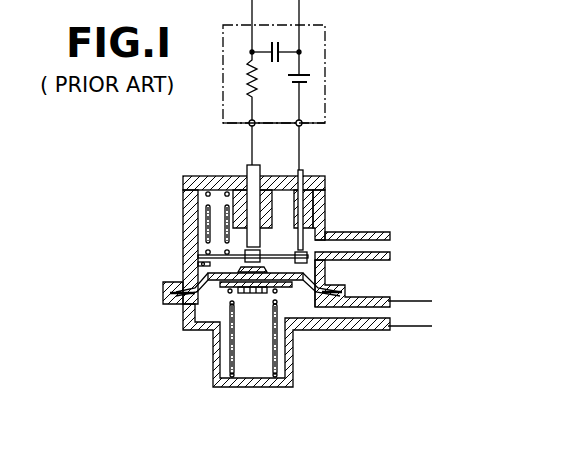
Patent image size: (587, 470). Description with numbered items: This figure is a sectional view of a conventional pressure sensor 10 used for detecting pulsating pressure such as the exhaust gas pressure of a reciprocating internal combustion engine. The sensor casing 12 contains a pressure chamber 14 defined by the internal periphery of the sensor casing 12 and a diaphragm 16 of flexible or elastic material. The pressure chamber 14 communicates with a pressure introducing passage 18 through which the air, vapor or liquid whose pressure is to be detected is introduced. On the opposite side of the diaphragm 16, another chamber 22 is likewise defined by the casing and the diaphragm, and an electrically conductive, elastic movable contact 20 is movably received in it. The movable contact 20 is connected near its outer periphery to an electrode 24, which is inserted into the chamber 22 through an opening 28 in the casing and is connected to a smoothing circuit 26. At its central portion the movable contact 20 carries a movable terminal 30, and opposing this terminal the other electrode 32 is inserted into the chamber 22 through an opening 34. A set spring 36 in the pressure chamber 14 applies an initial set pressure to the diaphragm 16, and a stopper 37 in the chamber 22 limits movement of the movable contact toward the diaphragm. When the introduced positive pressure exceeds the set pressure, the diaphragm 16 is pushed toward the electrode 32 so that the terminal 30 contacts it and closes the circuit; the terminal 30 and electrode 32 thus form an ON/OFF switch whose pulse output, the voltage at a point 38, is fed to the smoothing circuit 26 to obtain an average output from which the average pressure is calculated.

The pressure sensor 10 is at (333, 167).
The sensor casing 12 is at (187, 212).
The pressure chamber 14 is at (298, 314).
The diaphragm 16 is at (326, 277).
The pressure introducing passage 18 is at (416, 318).
The movable contact 20 is at (183, 277).
The chamber 22 is at (197, 244).
The electrode 24 is at (326, 229).
The smoothing circuit 26 is at (328, 69).
The opening 28 is at (306, 216).
The movable terminal 30 is at (250, 249).
The electrode 32 is at (253, 197).
The opening 34 is at (300, 198).
The set spring 36 is at (230, 346).
The stopper 37 is at (200, 268).
The point 38 is at (255, 120).